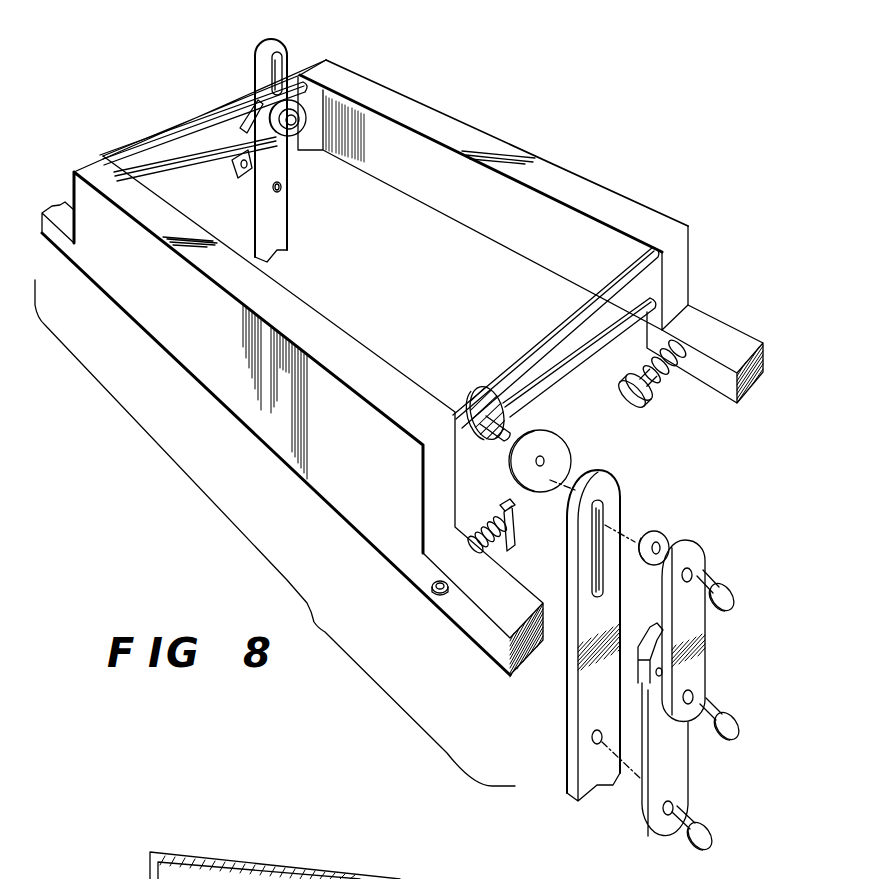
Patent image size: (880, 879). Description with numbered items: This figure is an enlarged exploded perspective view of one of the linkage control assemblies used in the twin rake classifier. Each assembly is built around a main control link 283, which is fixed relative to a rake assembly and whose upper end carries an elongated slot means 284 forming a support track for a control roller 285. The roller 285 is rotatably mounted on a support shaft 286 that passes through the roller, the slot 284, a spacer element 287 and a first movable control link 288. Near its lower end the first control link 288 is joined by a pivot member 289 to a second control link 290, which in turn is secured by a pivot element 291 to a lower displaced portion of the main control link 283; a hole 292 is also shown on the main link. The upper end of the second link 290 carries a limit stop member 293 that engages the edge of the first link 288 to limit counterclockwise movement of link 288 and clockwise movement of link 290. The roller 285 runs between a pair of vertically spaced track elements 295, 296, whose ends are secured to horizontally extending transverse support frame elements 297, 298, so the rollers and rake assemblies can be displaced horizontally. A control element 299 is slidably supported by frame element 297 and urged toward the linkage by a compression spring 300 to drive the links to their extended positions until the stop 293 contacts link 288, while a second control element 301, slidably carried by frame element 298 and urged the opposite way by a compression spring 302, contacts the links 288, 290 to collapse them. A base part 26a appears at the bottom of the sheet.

The main control link 283 is at (567, 712).
The elongated slot means 284 is at (278, 80).
The control roller 285 is at (297, 110).
The support shaft 286 is at (323, 141).
The spacer element 287 is at (663, 537).
The first movable control link 288 is at (248, 130).
The pivot member 289 is at (727, 717).
The second control link 290 is at (252, 170).
The pivot element 291 is at (703, 825).
The hole 292 is at (592, 742).
The limit stop member 293 is at (640, 673).
The track element 295 is at (187, 138).
The track element 296 is at (160, 177).
The transverse support frame element 297 is at (322, 338).
The transverse support frame element 298 is at (545, 167).
The control element 299 is at (512, 525).
The compression spring 300 is at (475, 530).
The second control element 301 is at (643, 402).
The compression spring 302 is at (682, 328).
The base plate 26a is at (452, 878).